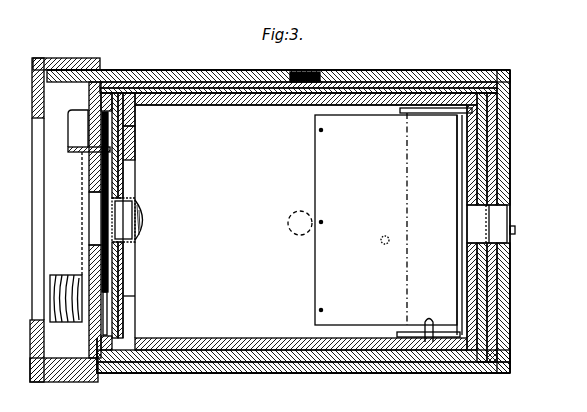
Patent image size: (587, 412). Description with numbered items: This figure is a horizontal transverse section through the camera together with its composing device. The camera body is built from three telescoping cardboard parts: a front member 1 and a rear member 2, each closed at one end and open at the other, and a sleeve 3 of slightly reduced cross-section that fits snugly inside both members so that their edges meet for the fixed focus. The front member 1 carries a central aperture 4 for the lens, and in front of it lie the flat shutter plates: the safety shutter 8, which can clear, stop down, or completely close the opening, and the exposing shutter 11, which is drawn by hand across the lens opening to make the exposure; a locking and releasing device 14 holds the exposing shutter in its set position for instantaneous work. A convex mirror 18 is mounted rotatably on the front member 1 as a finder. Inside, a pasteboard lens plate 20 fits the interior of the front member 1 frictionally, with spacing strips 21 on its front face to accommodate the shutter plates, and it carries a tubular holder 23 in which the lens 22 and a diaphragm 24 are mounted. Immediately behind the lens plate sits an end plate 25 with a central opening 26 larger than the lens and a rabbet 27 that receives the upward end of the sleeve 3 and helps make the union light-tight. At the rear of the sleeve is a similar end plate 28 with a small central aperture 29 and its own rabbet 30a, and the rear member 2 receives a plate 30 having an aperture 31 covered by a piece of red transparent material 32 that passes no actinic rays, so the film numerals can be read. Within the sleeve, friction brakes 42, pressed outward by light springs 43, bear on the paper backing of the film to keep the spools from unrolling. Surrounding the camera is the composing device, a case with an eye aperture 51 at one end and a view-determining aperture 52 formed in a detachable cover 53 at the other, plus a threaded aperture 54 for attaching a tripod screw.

The front member 1 is at (213, 72).
The rear member 2 is at (471, 90).
The sleeve 3 is at (238, 99).
The central aperture 4 is at (96, 197).
The safety shutter 8 is at (135, 298).
The exposing shutter 11 is at (102, 214).
The locking and releasing device 14 is at (135, 118).
The convex mirror 18 is at (65, 275).
The lens plate 20 is at (135, 133).
The spacing strips 21 is at (110, 96).
The lens 22 is at (142, 233).
The tubular holder 23 is at (134, 198).
The diaphragm 24 is at (116, 218).
The end plate 25 is at (135, 312).
The central opening 26 is at (129, 268).
The rabbet 27 is at (206, 82).
The rear end plate 28 is at (467, 172).
The central aperture 29 is at (468, 238).
The plate 30 is at (512, 93).
The plate 30a is at (452, 108).
The central aperture 31 is at (478, 211).
The transparent material 32 is at (484, 225).
The friction brakes 42 is at (386, 227).
The springs 43 is at (384, 245).
The eye aperture 51 is at (515, 231).
The view-determining aperture 52 is at (32, 264).
The cover 53 is at (60, 58).
The threaded aperture 54 is at (306, 74).